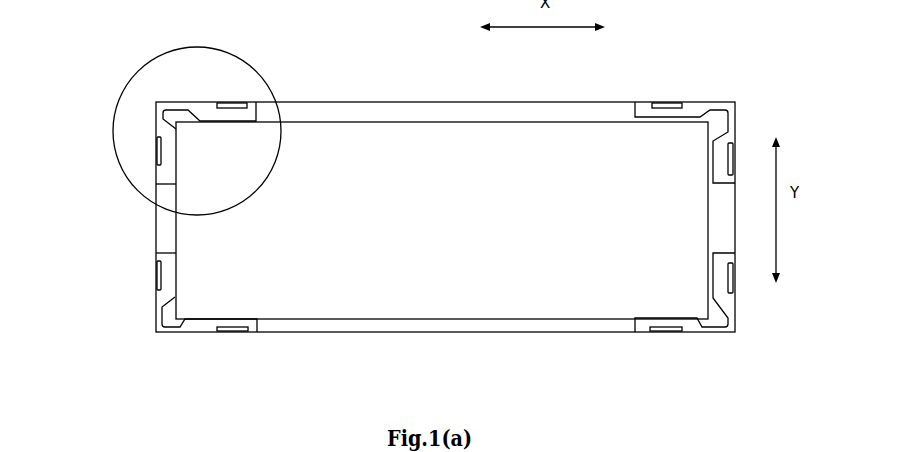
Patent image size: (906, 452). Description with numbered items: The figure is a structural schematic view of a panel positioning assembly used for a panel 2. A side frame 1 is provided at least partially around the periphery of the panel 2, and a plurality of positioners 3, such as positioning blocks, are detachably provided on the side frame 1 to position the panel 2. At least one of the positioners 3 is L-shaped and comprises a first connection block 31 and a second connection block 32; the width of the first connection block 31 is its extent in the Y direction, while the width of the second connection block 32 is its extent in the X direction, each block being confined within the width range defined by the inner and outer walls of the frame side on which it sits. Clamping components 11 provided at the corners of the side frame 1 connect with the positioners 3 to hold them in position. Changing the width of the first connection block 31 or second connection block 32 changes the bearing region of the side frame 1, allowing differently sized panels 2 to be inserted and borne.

The side frame 1 is at (318, 102).
The panel 2 is at (448, 295).
The clamping component 11 is at (157, 280).
The positioner 3 is at (222, 95).
The first connection block 31 is at (192, 47).
The second connection block 32 is at (155, 167).